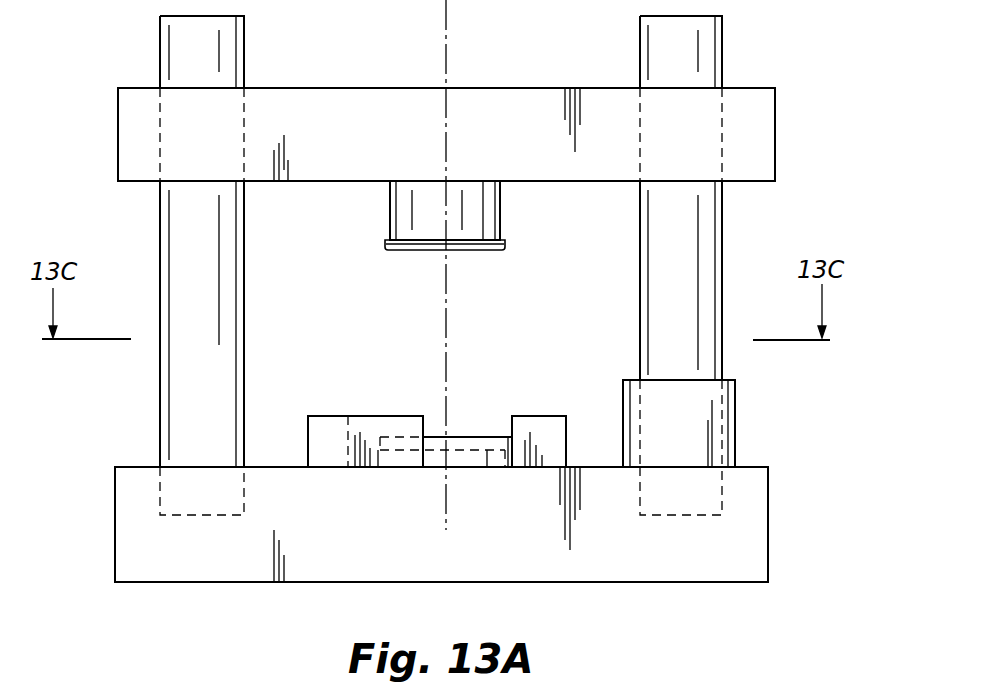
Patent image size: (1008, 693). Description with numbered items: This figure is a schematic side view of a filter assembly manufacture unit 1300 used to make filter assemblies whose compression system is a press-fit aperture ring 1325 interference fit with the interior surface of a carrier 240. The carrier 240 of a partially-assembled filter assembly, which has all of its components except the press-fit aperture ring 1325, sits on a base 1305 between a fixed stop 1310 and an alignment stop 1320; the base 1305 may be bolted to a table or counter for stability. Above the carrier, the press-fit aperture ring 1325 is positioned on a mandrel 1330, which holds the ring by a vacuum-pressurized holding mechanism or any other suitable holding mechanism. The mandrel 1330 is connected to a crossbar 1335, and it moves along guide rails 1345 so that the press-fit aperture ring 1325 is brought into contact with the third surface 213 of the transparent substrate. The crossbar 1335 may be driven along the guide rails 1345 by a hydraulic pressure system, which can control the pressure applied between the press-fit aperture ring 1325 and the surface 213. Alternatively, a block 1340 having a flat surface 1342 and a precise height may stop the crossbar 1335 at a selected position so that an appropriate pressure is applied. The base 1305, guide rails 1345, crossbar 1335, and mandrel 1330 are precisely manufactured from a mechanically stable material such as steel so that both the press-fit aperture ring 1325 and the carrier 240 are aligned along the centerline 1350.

The filter assembly manufacture unit 1300 is at (820, 66).
The base 1305 is at (762, 523).
The fixed stop 1310 is at (336, 416).
The alignment stop 1320 is at (557, 433).
The press-fit aperture ring 1325 is at (462, 250).
The mandrel 1330 is at (500, 209).
The crossbar 1335 is at (342, 88).
The block 1340 is at (735, 436).
The flat surface 1342 is at (728, 374).
The guide rails 1345 is at (160, 212).
The centerline 1350 is at (446, 48).
The third surface 213 is at (461, 450).
The carrier 240 is at (490, 438).